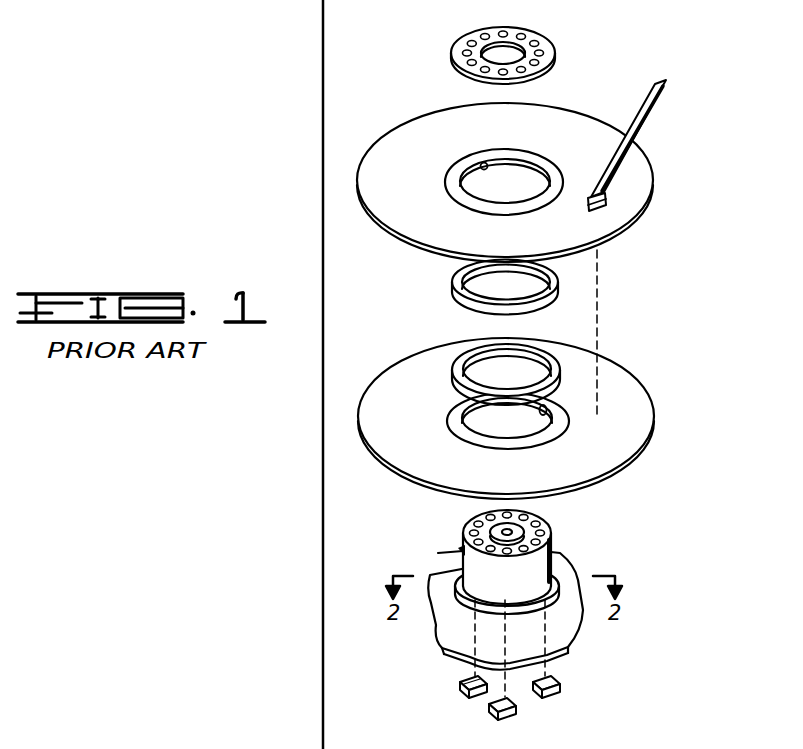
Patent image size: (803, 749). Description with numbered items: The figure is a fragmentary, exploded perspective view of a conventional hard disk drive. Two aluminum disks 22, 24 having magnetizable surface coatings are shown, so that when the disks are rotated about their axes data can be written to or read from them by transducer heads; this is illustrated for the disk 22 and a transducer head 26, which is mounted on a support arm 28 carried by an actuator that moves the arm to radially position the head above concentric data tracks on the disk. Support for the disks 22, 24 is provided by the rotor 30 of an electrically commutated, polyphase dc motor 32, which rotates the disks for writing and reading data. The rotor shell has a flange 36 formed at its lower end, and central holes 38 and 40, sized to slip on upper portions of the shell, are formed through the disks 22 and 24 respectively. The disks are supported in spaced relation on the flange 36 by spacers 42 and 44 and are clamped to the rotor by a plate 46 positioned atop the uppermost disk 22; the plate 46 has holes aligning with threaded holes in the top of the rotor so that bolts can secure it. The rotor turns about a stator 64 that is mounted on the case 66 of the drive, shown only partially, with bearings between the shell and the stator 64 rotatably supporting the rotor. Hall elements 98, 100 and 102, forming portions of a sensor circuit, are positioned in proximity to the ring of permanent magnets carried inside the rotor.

The disk 22 is at (540, 119).
The disk 24 is at (636, 424).
The transducer head 26 is at (598, 213).
The support arm 28 is at (665, 102).
The rotor 30 is at (550, 555).
The dc motor 32 is at (462, 551).
The flange 36 is at (549, 588).
The central hole 38 is at (483, 163).
The central hole 40 is at (546, 408).
The spacer 42 is at (553, 283).
The spacer 44 is at (553, 368).
The plate 46 is at (540, 46).
The stator 64 is at (253, 748).
The case 66 is at (557, 634).
The Hall element 98 is at (560, 672).
The Hall element 100 is at (492, 706).
The Hall element 102 is at (470, 683).